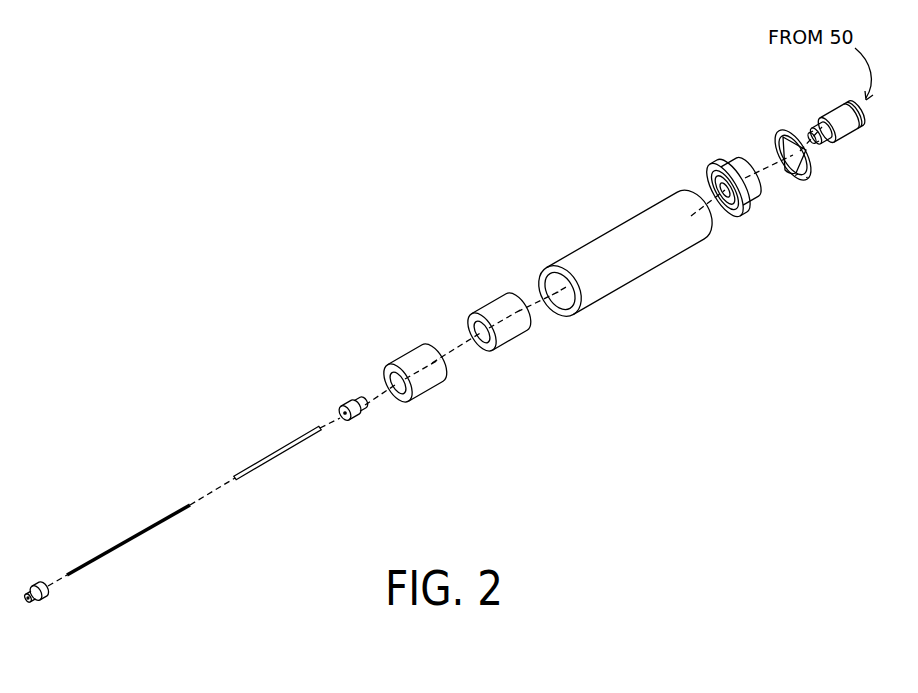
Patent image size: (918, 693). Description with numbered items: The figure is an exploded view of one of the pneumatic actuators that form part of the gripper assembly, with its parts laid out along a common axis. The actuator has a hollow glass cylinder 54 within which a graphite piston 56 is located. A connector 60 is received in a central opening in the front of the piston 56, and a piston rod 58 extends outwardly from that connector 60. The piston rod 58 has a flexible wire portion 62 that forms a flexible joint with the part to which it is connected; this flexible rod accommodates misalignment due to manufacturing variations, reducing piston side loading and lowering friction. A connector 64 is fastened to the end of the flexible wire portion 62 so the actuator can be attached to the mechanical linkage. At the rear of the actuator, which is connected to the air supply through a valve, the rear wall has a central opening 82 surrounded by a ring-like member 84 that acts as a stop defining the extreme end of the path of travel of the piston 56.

The hollow glass cylinder 54 is at (629, 218).
The graphite piston 56 is at (503, 286).
The piston rod 58 is at (262, 457).
The connector 60 is at (352, 421).
The flexible wire portion 62 is at (138, 533).
The connector 64 is at (35, 607).
The central opening 82 is at (720, 216).
The ring-like member 84 is at (757, 213).